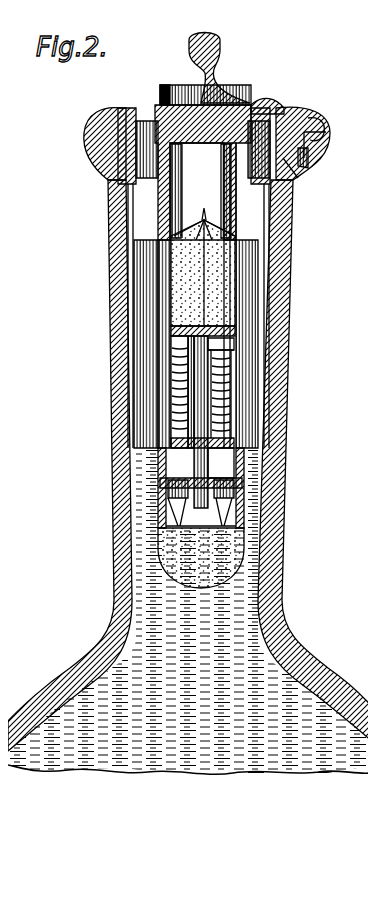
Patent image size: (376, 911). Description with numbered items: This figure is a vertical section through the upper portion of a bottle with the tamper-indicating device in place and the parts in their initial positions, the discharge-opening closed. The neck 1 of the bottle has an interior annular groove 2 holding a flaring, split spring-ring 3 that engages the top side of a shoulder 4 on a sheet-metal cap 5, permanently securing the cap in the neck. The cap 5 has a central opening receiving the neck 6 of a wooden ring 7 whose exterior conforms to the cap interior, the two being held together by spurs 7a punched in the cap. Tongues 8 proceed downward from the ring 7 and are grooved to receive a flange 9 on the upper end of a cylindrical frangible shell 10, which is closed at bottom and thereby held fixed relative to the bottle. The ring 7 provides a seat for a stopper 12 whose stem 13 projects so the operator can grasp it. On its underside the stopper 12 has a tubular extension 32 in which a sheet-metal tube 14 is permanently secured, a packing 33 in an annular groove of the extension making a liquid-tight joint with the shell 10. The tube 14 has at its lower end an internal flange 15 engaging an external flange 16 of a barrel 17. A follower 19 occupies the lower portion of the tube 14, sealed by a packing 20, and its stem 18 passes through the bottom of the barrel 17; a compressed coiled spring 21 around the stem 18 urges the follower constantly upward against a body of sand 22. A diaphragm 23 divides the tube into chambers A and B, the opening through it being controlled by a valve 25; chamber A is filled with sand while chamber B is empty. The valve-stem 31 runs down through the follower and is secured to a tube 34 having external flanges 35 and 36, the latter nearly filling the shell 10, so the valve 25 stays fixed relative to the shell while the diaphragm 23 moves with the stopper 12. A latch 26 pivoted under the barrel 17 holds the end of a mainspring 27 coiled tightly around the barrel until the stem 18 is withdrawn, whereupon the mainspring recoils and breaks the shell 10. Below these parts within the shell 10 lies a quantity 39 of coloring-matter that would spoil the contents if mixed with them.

The neck 1 is at (284, 200).
The annular groove 2 is at (296, 148).
The spring-ring 3 is at (300, 130).
The shoulder 4 is at (288, 160).
The metallic cap 5 is at (262, 92).
The neck of ring 6 is at (240, 80).
The ring 7 is at (276, 102).
The spurs 7a is at (302, 112).
The tongues 8 is at (104, 232).
The flange 9 is at (100, 208).
The shell 10 is at (240, 275).
The stopper 12 is at (208, 92).
The stem 13 is at (186, 44).
The sheet-metal tube 14 is at (170, 186).
The internal flange 15 is at (228, 346).
The external flange 16 is at (228, 336).
The barrel 17 is at (162, 390).
The stem of follower 18 is at (190, 442).
The follower 19 is at (162, 336).
The packing 20 is at (160, 316).
The coiled spring 21 is at (165, 408).
The body of sand 22 is at (203, 273).
The diaphragm 23 is at (205, 218).
The valve 25 is at (188, 215).
The latch 26 is at (186, 430).
The mainspring 27 is at (240, 368).
The valve-stem 31 is at (235, 300).
The tubular extension 32 is at (150, 255).
The packing 33 is at (262, 214).
The tube 34 is at (226, 504).
The external flange 35 is at (236, 479).
The external flange 36 is at (222, 463).
The coloring-matter 39 is at (232, 550).
The chamber A is at (170, 282).
The chamber B is at (203, 191).